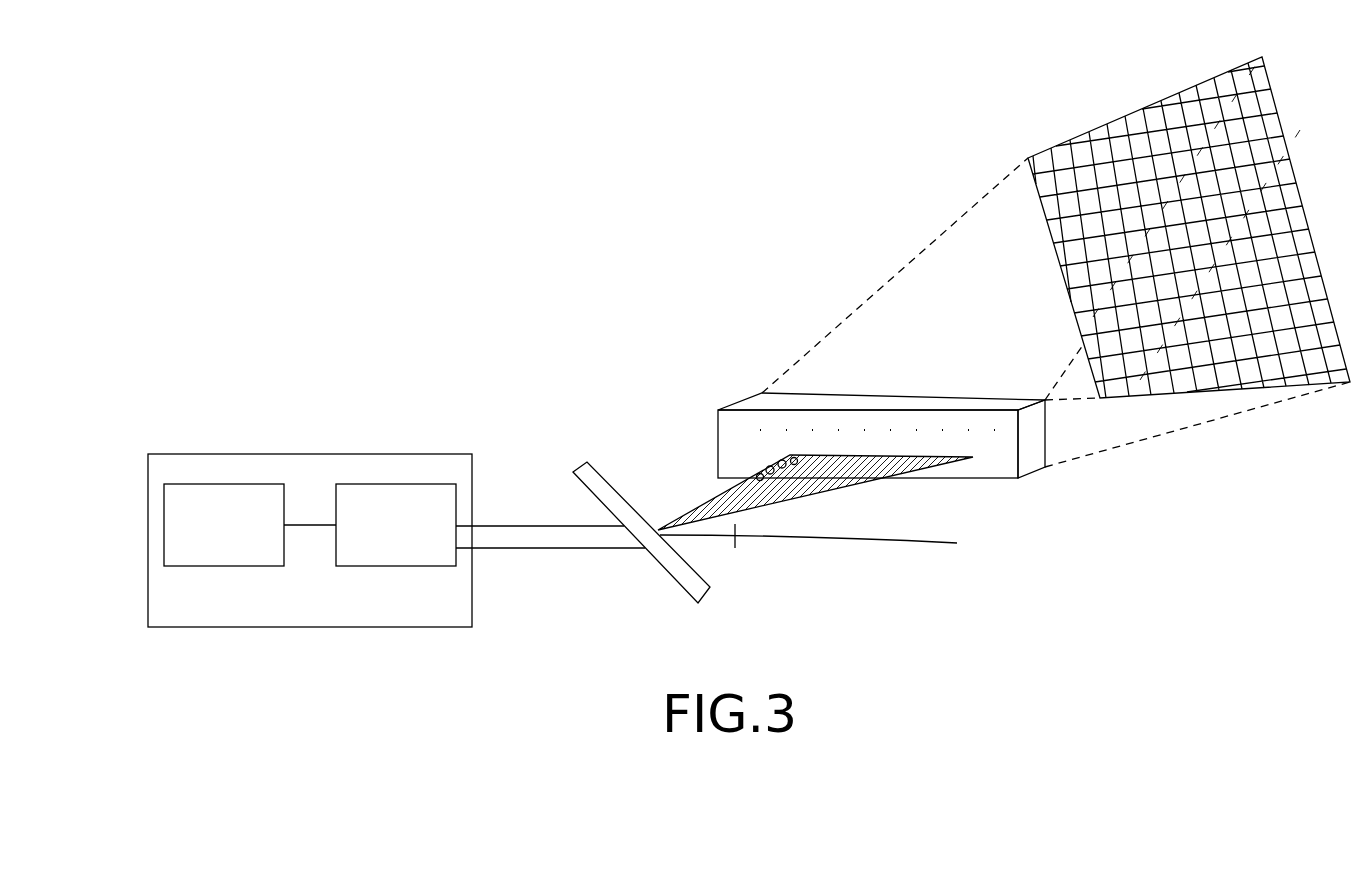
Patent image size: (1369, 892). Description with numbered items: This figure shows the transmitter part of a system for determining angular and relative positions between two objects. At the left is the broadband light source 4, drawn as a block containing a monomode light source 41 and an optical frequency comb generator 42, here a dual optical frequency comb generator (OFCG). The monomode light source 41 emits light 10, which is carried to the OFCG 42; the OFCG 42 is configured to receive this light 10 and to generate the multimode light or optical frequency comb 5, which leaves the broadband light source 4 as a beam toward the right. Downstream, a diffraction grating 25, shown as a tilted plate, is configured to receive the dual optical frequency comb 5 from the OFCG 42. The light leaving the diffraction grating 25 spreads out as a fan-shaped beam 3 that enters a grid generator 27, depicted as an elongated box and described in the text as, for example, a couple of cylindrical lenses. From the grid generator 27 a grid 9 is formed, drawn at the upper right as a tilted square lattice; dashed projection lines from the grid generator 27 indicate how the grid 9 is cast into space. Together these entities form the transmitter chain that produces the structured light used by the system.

The dispersed light 3 is at (717, 497).
The broadband light source 4 is at (370, 454).
The optical frequency comb 5 is at (473, 540).
The grid 9 is at (1263, 62).
The light 10 is at (310, 525).
The diffraction grating 25 is at (703, 588).
The grid generator 27 is at (987, 480).
The monomode light source 41 is at (224, 525).
The optical frequency comb generator 42 is at (396, 525).